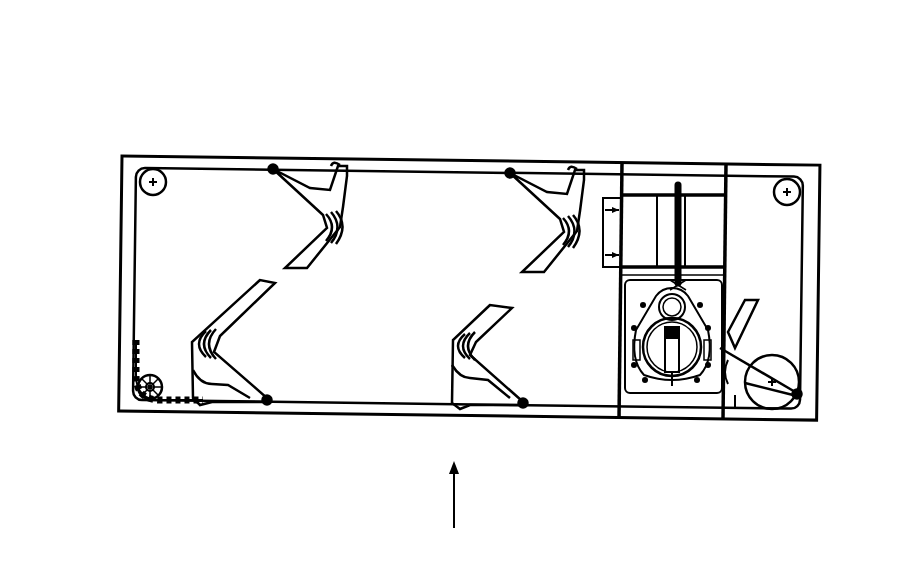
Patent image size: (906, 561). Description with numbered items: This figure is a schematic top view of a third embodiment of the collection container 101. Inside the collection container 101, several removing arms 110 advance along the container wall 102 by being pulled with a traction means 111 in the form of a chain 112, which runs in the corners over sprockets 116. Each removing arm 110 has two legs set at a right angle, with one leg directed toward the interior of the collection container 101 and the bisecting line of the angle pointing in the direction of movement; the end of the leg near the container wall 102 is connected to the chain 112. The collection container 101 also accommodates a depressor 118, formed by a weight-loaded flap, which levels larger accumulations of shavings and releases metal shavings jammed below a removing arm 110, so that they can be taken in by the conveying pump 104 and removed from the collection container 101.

The collection container 101 is at (316, 103).
The container wall 102 is at (120, 210).
The conveying pump 104 is at (657, 353).
The removing arm 110 is at (536, 192).
The traction means 111 is at (135, 285).
The chain 112 is at (130, 369).
The sprocket 116 is at (142, 402).
The depressor 118 is at (642, 215).